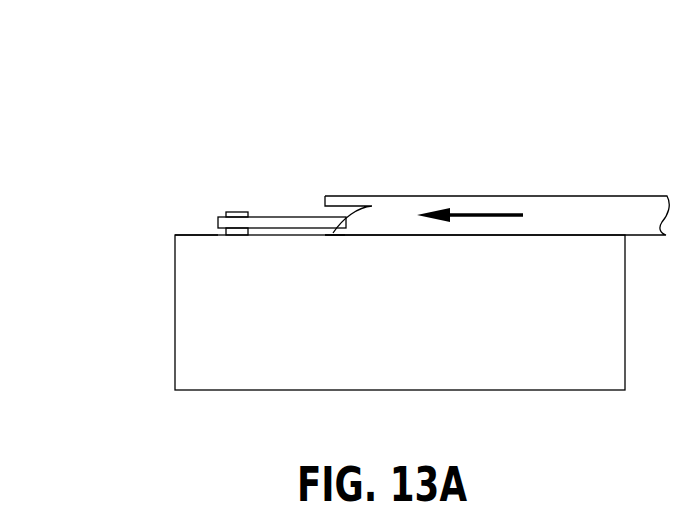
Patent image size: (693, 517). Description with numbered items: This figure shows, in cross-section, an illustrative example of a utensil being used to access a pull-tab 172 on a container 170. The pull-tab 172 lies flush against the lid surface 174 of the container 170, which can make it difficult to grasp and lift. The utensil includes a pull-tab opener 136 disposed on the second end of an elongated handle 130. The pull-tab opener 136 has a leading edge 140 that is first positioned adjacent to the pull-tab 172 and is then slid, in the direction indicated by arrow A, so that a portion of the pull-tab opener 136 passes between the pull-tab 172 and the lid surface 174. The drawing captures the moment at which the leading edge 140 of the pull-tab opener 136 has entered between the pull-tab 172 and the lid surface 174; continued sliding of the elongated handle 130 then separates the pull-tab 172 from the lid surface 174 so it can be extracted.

The elongated handle 130 is at (547, 188).
The pull-tab opener 136 is at (323, 189).
The leading edge 140 is at (325, 235).
The container 170 is at (248, 407).
The pull-tab 172 is at (292, 217).
The lid surface 174 is at (188, 235).